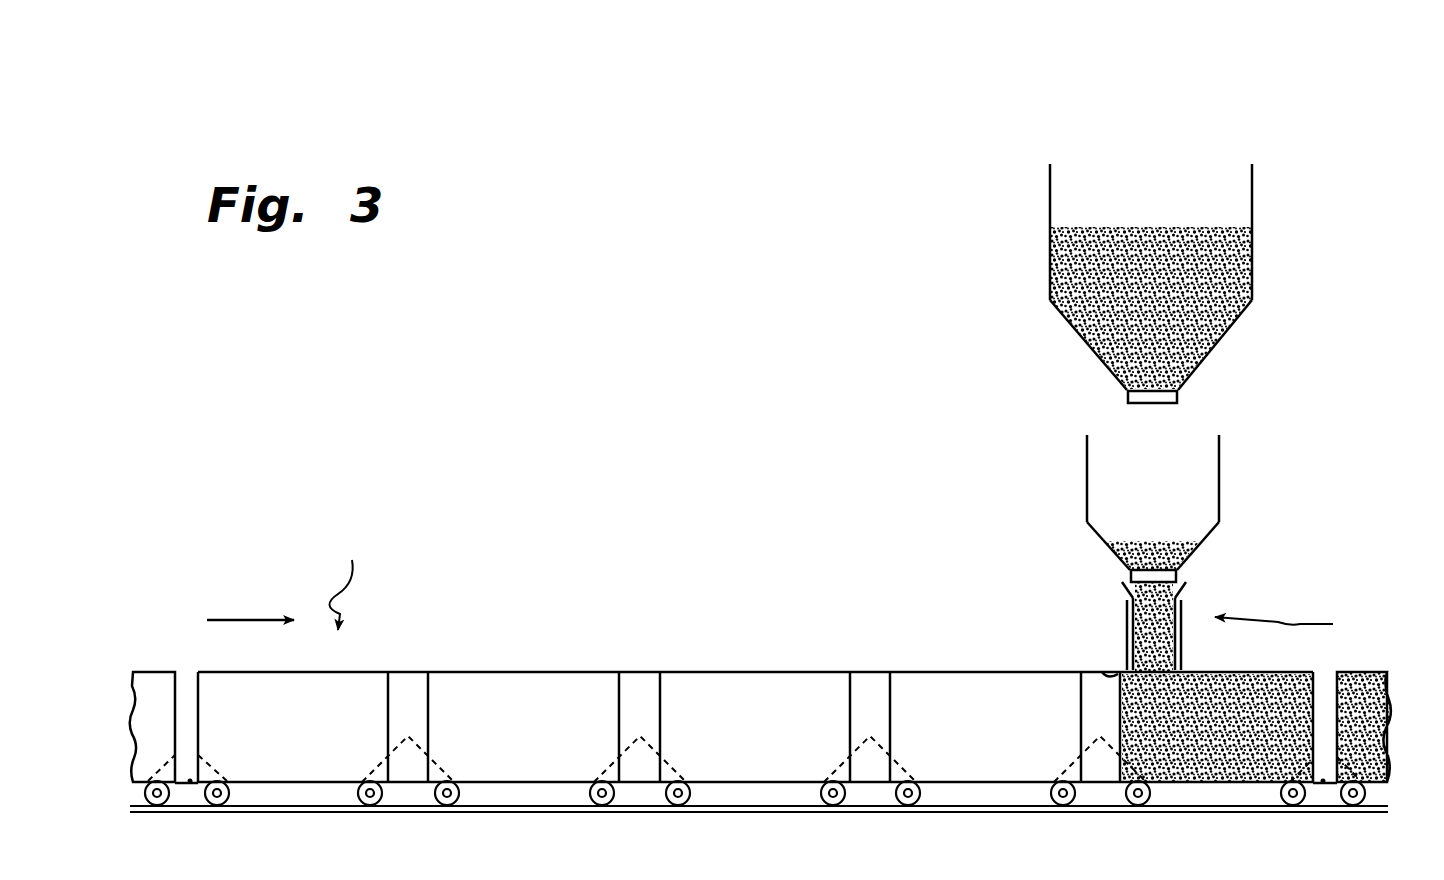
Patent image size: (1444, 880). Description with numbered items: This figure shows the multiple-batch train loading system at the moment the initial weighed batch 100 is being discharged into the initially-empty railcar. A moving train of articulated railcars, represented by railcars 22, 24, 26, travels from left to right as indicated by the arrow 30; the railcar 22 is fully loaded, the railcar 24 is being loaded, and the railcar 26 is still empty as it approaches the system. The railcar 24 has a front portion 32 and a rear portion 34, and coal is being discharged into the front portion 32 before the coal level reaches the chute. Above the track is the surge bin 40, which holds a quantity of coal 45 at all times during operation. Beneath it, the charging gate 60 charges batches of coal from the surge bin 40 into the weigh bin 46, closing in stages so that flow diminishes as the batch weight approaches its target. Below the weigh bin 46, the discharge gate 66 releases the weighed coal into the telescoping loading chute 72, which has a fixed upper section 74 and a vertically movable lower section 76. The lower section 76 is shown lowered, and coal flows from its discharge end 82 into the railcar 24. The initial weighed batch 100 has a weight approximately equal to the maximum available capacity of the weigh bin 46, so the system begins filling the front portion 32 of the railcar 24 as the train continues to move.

The articulated railcar 22 is at (1378, 672).
The articulated railcar 24 is at (685, 672).
The articulated railcar 26 is at (152, 672).
The arrow 30 is at (240, 618).
The front portion 32 is at (1212, 660).
The rear portion 34 is at (350, 576).
The surge bin 40 is at (1252, 210).
The quantity of coal 45 is at (1050, 272).
The weigh bin 46 is at (1219, 475).
The charging gate 60 is at (1178, 398).
The discharge gate 66 is at (1176, 578).
The telescoping loading chute 72 is at (1295, 623).
The fixed upper section 74 is at (1123, 591).
The lower section 76 is at (1127, 636).
The discharge end 82 is at (1108, 678).
The initial weighed batch 100 is at (1155, 548).